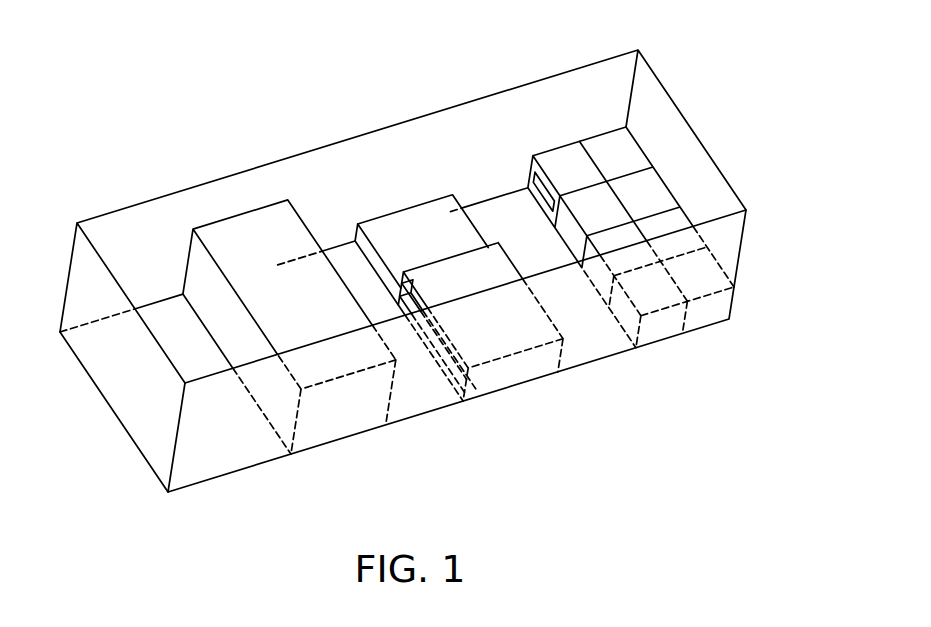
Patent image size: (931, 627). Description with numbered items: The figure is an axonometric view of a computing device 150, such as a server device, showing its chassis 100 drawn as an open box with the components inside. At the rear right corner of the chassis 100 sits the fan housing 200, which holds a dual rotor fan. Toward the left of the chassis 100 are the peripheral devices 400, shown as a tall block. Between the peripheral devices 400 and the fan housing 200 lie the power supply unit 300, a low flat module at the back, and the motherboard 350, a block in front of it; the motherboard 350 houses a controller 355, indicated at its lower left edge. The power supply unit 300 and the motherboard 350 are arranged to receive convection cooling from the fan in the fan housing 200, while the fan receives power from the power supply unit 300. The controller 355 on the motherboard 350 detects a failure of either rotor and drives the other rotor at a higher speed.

The chassis 100 is at (303, 152).
The computing device 150 is at (652, 419).
The fan housing 200 is at (677, 173).
The power supply unit 300 is at (420, 232).
The motherboard 350 is at (490, 267).
The controller 355 is at (441, 346).
The peripheral devices 400 is at (260, 240).